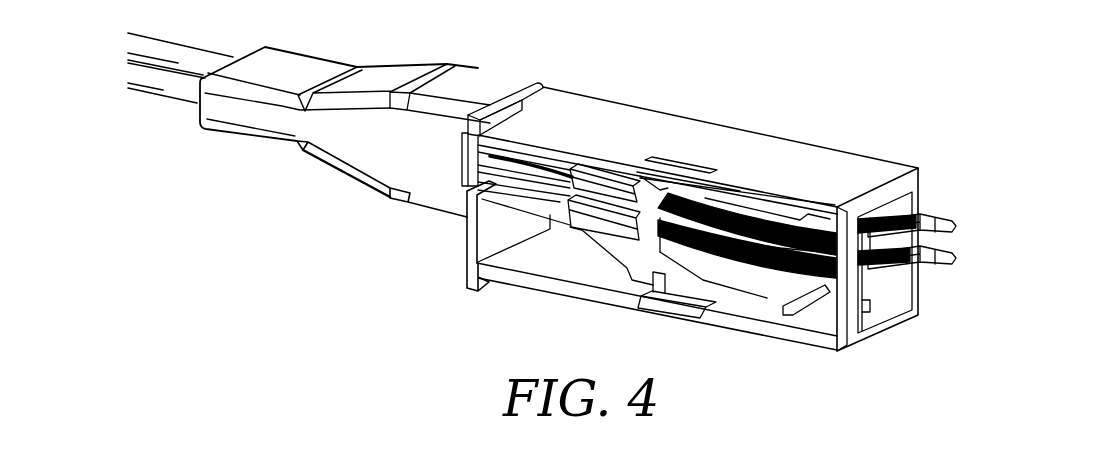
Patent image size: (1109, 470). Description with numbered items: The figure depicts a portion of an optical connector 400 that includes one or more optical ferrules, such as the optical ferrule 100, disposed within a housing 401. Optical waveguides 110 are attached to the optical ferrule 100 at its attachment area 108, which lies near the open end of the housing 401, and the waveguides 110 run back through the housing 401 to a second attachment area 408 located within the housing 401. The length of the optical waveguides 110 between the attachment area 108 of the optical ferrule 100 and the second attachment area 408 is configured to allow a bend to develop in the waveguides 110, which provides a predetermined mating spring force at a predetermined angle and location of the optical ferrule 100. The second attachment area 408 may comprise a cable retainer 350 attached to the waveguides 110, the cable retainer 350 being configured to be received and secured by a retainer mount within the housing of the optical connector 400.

The optical connector 400 is at (411, 257).
The housing 401 is at (722, 138).
The second attachment area 408 is at (588, 182).
The cable retainer 350 is at (586, 217).
The optical waveguides 110 is at (765, 278).
The attachment area 108 is at (872, 217).
The optical ferrule 100 is at (945, 222).